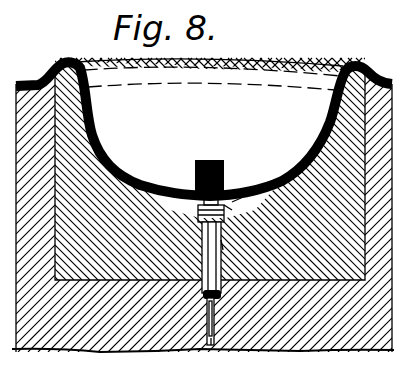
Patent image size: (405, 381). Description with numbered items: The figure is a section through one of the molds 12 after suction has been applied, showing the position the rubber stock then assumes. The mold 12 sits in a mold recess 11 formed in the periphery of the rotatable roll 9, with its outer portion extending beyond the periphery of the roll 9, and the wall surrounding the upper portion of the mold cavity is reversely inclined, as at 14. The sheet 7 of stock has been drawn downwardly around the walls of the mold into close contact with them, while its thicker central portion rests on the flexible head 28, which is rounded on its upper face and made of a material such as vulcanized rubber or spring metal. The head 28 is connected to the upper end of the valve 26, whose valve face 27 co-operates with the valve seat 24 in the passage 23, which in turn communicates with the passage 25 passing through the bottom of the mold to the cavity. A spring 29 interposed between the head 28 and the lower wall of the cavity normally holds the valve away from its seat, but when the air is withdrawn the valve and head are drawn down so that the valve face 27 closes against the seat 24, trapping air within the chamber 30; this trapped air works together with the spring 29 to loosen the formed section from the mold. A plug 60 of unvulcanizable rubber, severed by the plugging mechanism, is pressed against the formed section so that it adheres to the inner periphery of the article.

The sheet 7 is at (92, 134).
The rotatable roll 9 is at (125, 338).
The mold recess 11 is at (305, 280).
The mold 12 is at (202, 169).
The reversely inclined wall 14 is at (82, 106).
The passage 23 is at (210, 343).
The valve seat 24 is at (220, 297).
The passage 25 is at (216, 244).
The valve 26 is at (201, 240).
The valve face 27 is at (203, 297).
The flexible head 28 is at (196, 211).
The spring 29 is at (228, 218).
The chamber 30 is at (235, 208).
The plug 60 is at (226, 161).